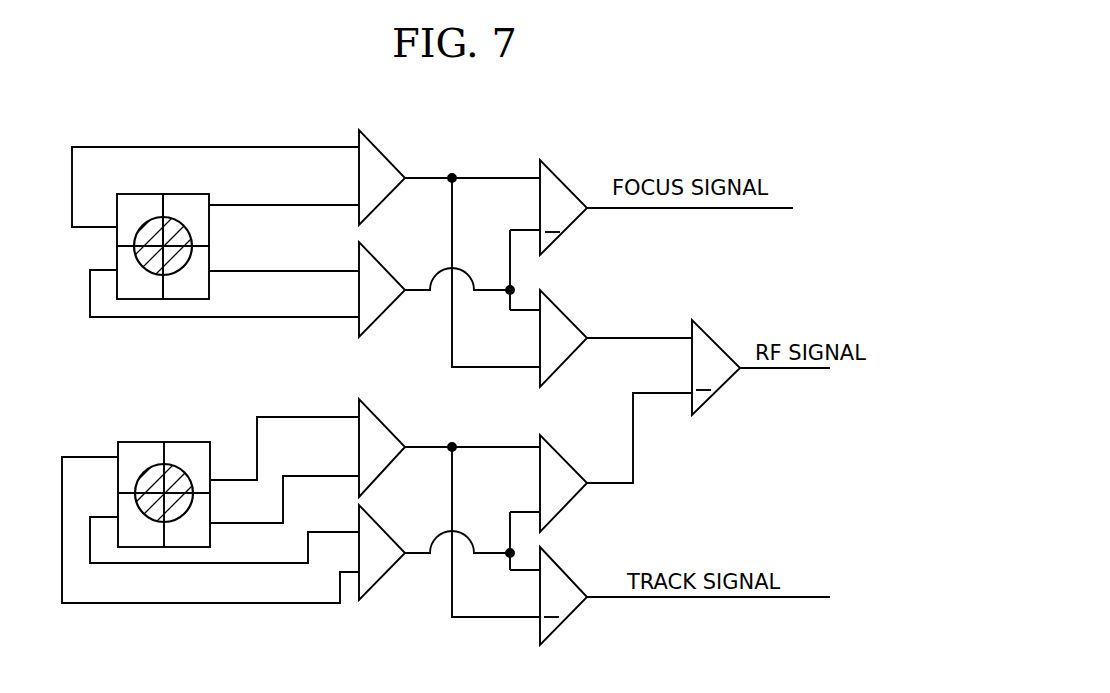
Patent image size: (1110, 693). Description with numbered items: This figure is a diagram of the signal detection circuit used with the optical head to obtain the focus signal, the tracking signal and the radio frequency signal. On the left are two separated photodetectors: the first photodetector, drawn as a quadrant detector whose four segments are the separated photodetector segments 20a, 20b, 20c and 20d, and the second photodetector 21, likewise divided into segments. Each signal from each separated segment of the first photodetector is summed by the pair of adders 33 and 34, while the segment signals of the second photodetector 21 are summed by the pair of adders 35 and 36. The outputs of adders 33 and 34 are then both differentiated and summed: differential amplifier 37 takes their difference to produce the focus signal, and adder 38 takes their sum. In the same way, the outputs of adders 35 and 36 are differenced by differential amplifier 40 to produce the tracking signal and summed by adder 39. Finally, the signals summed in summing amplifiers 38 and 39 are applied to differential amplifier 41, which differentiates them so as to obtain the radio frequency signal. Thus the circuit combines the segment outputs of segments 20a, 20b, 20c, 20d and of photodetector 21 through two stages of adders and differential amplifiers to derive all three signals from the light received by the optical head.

The separated photodetector segment 20a is at (185, 202).
The separated photodetector segment 20b is at (188, 287).
The separated photodetector segment 20c is at (140, 285).
The separated photodetector segment 20d is at (138, 207).
The second photodetector 21 is at (138, 457).
The adder 33 is at (378, 153).
The adder 34 is at (375, 300).
The adder 35 is at (378, 420).
The adder 36 is at (378, 530).
The differential amplifier 37 is at (560, 200).
The adder 38 is at (548, 318).
The adder 39 is at (555, 465).
The differential amplifier 40 is at (558, 590).
The differential amplifier 41 is at (710, 345).